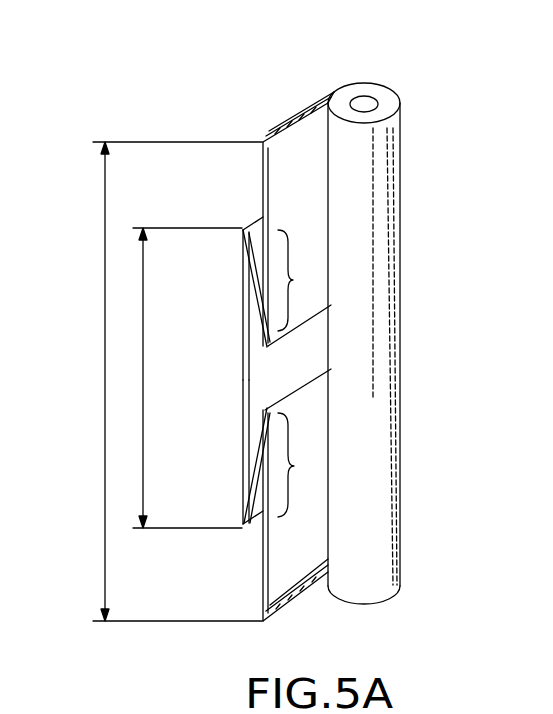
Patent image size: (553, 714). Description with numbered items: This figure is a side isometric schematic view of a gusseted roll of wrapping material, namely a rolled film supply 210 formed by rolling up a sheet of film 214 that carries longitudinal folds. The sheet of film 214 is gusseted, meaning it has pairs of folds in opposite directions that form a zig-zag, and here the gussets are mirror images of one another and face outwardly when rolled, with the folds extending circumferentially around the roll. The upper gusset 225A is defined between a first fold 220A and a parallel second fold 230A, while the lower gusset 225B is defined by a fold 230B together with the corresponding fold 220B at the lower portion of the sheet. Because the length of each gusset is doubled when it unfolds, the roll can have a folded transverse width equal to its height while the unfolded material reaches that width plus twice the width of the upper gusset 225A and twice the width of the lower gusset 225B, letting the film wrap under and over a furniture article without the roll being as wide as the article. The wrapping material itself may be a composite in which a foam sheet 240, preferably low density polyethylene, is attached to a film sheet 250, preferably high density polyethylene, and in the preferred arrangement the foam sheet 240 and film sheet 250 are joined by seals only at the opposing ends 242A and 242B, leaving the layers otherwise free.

The rolled film supply 210 is at (385, 142).
The sheet of film 214 is at (288, 150).
The first fold 220A is at (254, 221).
The lower bent tab 220B is at (248, 523).
The upper gusset 225A is at (293, 280).
The lower gusset 225B is at (295, 466).
The second fold 230A is at (293, 326).
The fold 230B is at (297, 390).
The foam sheet 240 is at (312, 197).
The opposing end 242A is at (307, 110).
The opposing end 242B is at (307, 600).
The film sheet 250 is at (242, 445).